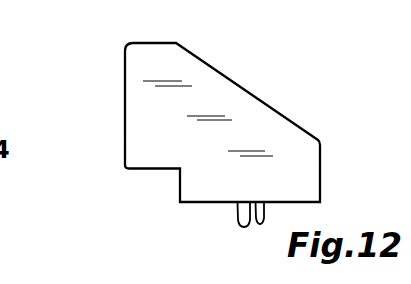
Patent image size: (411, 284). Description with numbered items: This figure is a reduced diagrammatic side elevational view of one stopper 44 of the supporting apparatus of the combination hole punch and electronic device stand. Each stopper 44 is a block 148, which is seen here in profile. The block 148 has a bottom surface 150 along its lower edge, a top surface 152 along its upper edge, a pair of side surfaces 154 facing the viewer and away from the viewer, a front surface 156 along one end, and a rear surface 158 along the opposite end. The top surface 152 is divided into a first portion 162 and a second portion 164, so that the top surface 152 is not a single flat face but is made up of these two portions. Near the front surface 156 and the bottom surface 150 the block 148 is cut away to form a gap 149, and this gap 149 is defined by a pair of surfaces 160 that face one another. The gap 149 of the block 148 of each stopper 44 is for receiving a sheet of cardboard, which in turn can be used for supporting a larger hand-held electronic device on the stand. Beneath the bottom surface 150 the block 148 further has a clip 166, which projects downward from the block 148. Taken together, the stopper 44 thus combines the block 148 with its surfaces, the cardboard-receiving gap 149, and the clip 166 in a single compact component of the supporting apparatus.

The stopper 44 is at (117, 135).
The block 148 is at (117, 85).
The gap 149 is at (158, 183).
The bottom surface 150 is at (312, 203).
The top surface 152 is at (143, 42).
The side surfaces 154 is at (287, 0).
The front surface 156 is at (125, 154).
The rear surface 158 is at (320, 160).
The surfaces 160 is at (142, 172).
The first portion 162 is at (160, 42).
The second portion 164 is at (277, 118).
The clip 166 is at (238, 210).